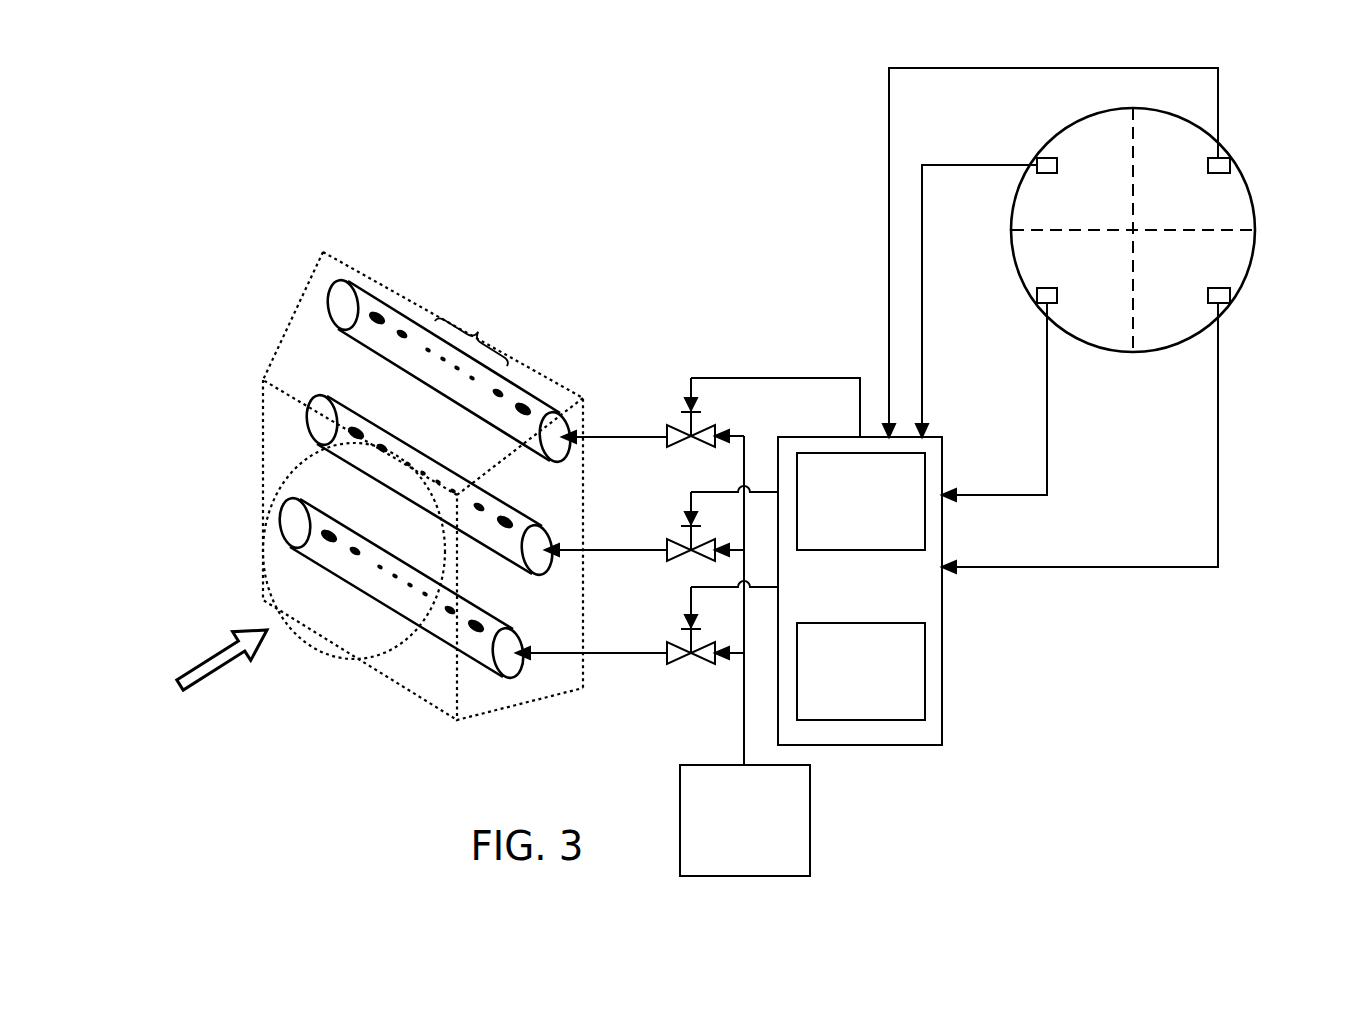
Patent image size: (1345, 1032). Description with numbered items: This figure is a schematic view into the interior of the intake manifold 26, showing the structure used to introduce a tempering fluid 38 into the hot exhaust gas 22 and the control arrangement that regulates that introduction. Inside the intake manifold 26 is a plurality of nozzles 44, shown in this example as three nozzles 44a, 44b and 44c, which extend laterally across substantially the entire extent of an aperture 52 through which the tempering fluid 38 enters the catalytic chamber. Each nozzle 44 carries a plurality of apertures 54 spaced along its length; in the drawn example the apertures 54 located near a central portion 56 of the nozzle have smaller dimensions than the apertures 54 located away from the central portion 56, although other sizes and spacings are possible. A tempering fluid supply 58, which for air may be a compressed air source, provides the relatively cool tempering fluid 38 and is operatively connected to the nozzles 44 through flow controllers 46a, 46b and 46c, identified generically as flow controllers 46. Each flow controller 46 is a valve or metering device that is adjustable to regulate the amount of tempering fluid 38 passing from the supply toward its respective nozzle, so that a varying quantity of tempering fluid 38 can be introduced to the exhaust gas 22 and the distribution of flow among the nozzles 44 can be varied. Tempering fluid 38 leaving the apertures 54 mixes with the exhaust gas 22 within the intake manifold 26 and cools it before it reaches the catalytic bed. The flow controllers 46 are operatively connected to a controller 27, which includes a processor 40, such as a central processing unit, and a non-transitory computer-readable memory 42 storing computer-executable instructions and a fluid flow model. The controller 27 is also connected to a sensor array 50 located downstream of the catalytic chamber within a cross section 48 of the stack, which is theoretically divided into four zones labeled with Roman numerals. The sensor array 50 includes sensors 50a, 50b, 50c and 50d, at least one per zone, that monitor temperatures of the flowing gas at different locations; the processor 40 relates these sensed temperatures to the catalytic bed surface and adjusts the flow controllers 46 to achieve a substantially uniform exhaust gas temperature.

The exhaust gas 22 is at (220, 664).
The intake manifold 26 is at (326, 251).
The controller 27 is at (902, 591).
The tempering fluid 38 is at (620, 436).
The processor 40 is at (889, 486).
The memory 42 is at (892, 654).
The nozzles 44 is at (363, 460).
The first nozzle 44a is at (402, 352).
The second nozzle 44b is at (308, 403).
The third nozzle 44c is at (354, 581).
The flow controllers 46 is at (733, 516).
The first flow controller 46a is at (670, 450).
The second flow controller 46b is at (672, 563).
The third flow controller 46c is at (672, 666).
The cross section of the stack 48 is at (1000, 212).
The sensor array 50 is at (1102, 320).
The first sensor 50a is at (1041, 157).
The second sensor 50b is at (1231, 167).
The third sensor 50c is at (1231, 296).
The fourth sensor 50d is at (1036, 296).
The aperture 52 is at (338, 607).
The apertures 54 is at (403, 332).
The central portion 56 is at (475, 329).
The tempering fluid supply 58 is at (810, 820).